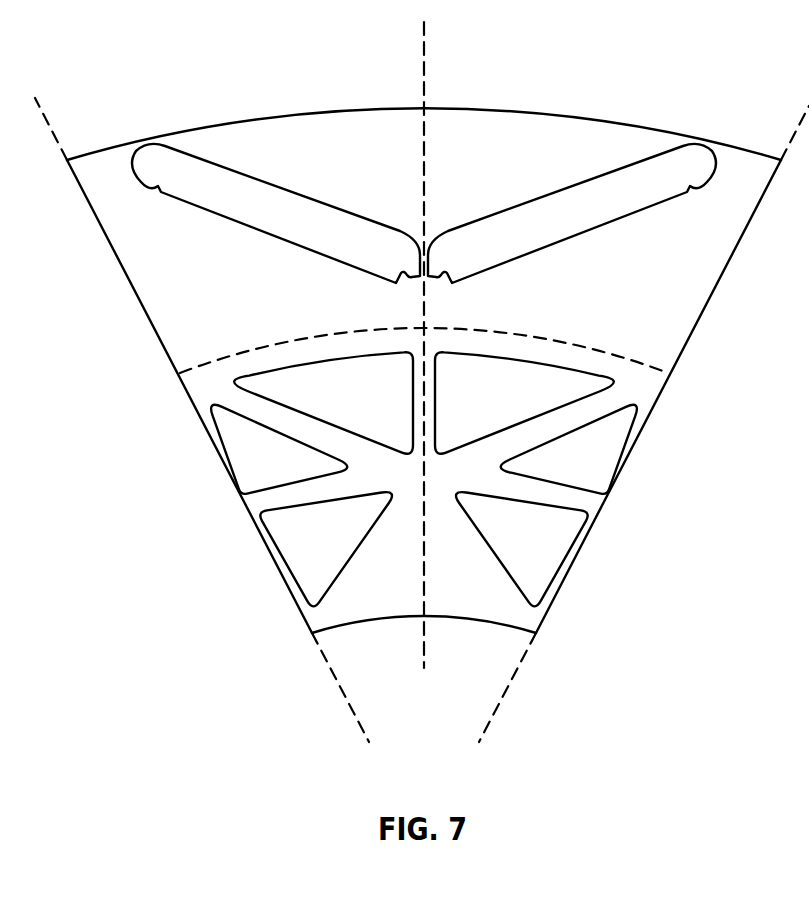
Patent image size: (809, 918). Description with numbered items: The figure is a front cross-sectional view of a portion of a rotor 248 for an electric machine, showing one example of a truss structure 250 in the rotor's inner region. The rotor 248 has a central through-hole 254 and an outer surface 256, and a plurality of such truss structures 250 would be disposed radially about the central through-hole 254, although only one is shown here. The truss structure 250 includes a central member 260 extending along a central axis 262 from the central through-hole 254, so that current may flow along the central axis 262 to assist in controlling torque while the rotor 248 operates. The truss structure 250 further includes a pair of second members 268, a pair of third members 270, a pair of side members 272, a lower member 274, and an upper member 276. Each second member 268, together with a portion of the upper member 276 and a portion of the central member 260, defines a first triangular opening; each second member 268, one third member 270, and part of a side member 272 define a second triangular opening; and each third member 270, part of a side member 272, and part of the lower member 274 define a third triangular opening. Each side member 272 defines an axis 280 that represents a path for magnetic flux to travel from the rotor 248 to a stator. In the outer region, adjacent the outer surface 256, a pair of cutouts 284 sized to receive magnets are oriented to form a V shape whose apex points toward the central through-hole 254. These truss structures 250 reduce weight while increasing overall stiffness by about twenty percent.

The rotor 248 is at (508, 106).
The truss structure 250 is at (540, 333).
The central through-hole 254 is at (428, 618).
The outer surface 256 is at (263, 108).
The central member 260 is at (427, 395).
The central axis 262 is at (420, 61).
The second members 268 is at (299, 428).
The third members 270 is at (288, 497).
The side members 272 is at (270, 555).
The lower member 274 is at (362, 612).
The upper member 276 is at (308, 346).
The axis 280 is at (47, 119).
The cutouts 284 is at (292, 192).